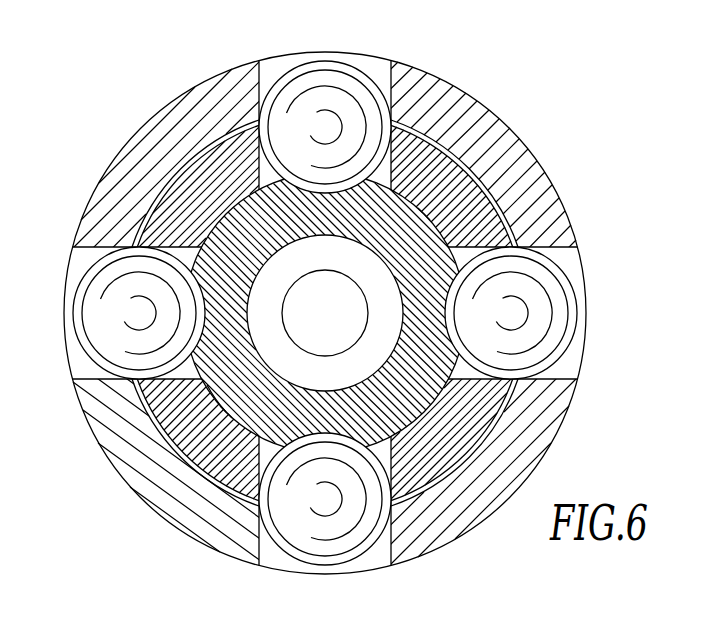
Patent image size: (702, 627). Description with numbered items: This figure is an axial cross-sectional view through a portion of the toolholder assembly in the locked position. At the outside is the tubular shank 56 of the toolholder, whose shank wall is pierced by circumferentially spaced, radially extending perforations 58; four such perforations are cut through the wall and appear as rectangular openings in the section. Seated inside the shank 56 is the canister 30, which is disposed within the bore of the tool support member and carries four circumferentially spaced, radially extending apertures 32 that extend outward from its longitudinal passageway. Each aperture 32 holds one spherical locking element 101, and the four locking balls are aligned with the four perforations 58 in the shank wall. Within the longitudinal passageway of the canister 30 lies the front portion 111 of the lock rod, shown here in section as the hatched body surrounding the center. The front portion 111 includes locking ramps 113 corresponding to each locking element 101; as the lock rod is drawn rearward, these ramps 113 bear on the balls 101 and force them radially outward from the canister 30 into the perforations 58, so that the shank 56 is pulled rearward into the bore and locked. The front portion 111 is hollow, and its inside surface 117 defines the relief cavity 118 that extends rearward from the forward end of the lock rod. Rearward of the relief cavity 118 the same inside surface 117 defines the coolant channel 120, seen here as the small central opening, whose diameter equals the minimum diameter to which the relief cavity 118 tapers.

The canister 30 is at (478, 203).
The apertures 32 is at (253, 186).
The shank 56 is at (510, 150).
The perforations 58 is at (392, 80).
The locking elements 101 is at (320, 78).
The front portion of lock rod 111 is at (224, 396).
The locking ramps 113 is at (356, 202).
The inside surface 117 is at (315, 391).
The relief cavity 118 is at (305, 250).
The coolant channel 120 is at (300, 282).